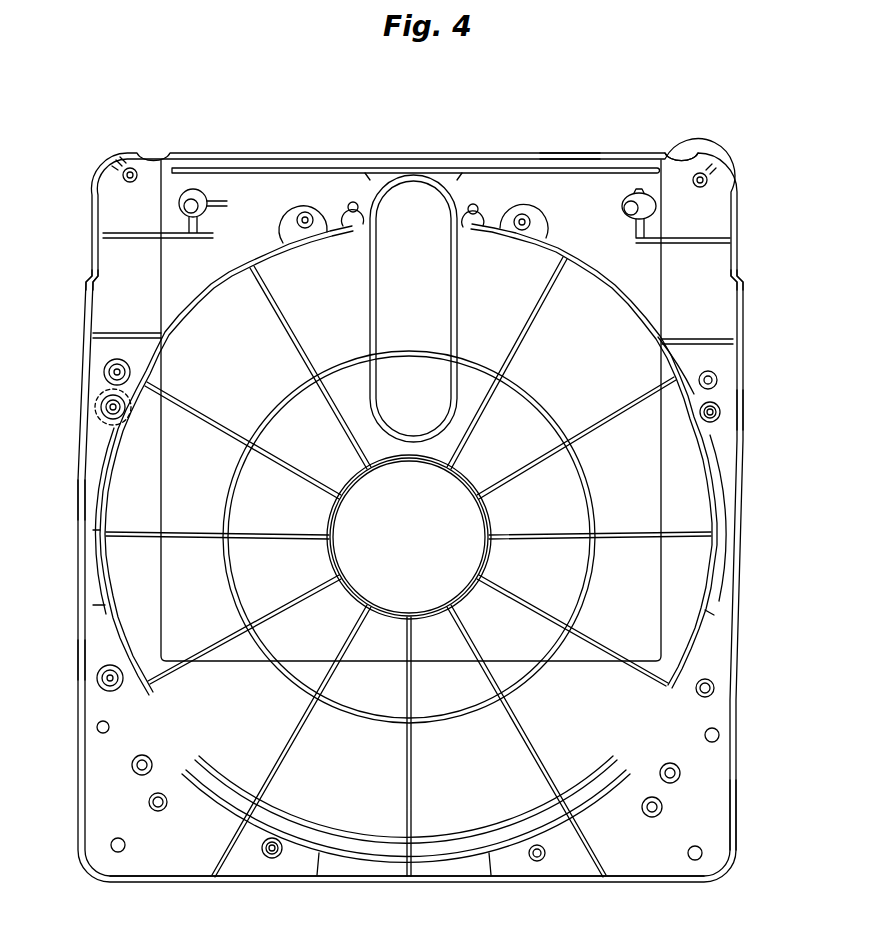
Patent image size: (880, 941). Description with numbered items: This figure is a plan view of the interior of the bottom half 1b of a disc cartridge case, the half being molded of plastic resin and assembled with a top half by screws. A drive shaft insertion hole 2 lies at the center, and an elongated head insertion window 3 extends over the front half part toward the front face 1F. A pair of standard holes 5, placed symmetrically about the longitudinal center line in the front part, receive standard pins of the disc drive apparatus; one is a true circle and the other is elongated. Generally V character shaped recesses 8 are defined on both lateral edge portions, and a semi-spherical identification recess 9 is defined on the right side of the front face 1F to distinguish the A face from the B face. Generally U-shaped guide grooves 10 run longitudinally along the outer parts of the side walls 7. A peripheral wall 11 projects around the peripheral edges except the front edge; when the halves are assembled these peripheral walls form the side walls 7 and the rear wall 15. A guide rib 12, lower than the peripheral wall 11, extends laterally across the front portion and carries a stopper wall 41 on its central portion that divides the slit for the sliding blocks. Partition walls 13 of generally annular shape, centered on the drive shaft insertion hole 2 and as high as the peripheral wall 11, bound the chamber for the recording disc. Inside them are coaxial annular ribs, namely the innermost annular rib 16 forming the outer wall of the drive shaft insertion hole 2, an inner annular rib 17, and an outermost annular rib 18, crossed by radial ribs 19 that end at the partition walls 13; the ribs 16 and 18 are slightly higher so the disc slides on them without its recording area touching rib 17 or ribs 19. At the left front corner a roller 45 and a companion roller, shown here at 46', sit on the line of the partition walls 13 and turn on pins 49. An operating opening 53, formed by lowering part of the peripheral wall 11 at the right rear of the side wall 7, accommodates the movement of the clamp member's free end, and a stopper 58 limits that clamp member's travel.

The bottom half 1b is at (82, 190).
The front face 1F is at (542, 152).
The drive shaft insertion hole 2 is at (409, 537).
The head insertion window 3 is at (413, 308).
The standard holes 5 is at (202, 213).
The side walls 7 is at (95, 322).
The V character shaped recesses 8 is at (88, 278).
The identification recess 9 is at (686, 156).
The guide grooves 10 is at (80, 490).
The peripheral wall 11 is at (82, 660).
The guide rib 12 is at (263, 160).
The partition walls 13 is at (221, 287).
The rear wall 15 is at (347, 880).
The innermost annular rib 16 is at (335, 518).
The inner annular rib 17 is at (228, 515).
The outermost annular rib 18 is at (114, 510).
The radial ribs 19 is at (527, 362).
The stopper wall 41 is at (430, 172).
The roller 45 is at (130, 425).
The boss 46' is at (413, 242).
The pins 49 is at (298, 215).
The operating opening 53 is at (738, 797).
The stopper 58 is at (720, 733).